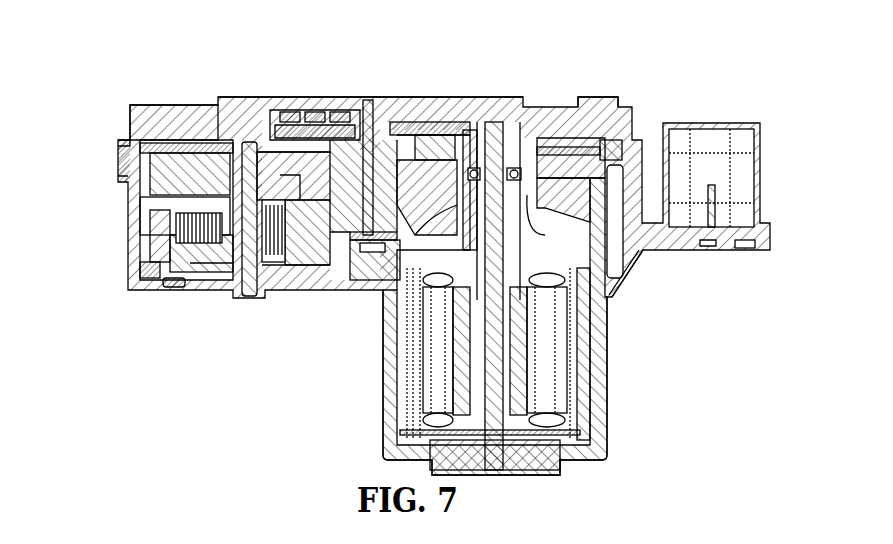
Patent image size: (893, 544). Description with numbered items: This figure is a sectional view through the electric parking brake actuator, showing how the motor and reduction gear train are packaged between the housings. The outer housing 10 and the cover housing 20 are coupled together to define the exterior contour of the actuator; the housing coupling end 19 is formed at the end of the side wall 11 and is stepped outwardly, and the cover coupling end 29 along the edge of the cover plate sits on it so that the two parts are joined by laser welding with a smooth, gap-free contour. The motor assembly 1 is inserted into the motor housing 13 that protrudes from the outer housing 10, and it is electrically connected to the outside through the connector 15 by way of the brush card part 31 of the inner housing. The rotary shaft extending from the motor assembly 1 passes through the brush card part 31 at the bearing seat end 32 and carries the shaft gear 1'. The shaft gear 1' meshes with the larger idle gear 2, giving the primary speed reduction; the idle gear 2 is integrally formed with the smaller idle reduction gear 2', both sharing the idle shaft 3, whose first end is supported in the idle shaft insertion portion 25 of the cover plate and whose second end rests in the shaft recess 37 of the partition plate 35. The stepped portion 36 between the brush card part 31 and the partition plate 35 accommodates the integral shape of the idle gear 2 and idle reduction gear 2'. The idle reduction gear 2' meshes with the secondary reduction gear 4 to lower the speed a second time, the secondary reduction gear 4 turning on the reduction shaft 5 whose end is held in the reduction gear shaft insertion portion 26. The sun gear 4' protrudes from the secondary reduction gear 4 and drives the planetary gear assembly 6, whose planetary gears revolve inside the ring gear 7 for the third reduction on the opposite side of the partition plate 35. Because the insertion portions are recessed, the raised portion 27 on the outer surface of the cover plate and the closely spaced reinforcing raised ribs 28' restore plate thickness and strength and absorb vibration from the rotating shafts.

The secondary reduction gear 4 is at (444, 271).
The sun gear 4' is at (174, 103).
The cover coupling end 29 is at (118, 157).
The partition plate 35 is at (125, 200).
The side wall 11 is at (127, 225).
The planetary gear assembly 6 is at (225, 272).
The ring gear 7 is at (125, 258).
The motor housing 13 is at (152, 288).
The reduction shaft 5 is at (253, 300).
The idle shaft 3 is at (322, 290).
The shaft recess 37 is at (366, 290).
The reduction gear shaft insertion portion 26 is at (250, 112).
The reinforcing raised ribs 28' is at (312, 83).
The idle shaft insertion portion 25 is at (370, 100).
The idle reduction gear 2' is at (396, 112).
The stepped portion 36 is at (410, 122).
The idle gear 2 is at (370, 70).
The raised portion 27 is at (455, 100).
The shaft gear 1' is at (557, 140).
The bearing seat end 32 is at (552, 118).
The cover housing 20 is at (612, 97).
The housing coupling end 19 is at (645, 150).
The connector 15 is at (730, 255).
The brush card part 31 is at (643, 287).
The outer housing 10 is at (609, 320).
The motor assembly 1 is at (534, 296).